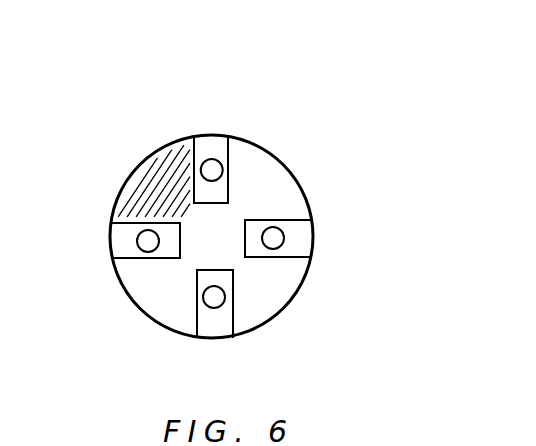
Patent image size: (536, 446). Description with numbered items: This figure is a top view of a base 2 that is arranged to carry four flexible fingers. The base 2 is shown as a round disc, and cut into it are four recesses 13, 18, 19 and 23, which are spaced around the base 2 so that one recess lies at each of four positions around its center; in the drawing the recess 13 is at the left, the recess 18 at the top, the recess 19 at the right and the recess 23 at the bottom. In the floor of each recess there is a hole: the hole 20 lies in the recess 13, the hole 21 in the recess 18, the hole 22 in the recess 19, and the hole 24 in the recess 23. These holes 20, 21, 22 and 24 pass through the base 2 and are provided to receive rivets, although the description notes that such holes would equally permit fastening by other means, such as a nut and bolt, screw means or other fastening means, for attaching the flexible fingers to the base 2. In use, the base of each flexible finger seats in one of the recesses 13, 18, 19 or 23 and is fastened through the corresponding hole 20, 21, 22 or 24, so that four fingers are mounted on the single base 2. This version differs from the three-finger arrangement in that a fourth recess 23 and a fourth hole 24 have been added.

The base 2 is at (133, 131).
The recess 13 is at (123, 255).
The recess 18 is at (203, 137).
The recess 19 is at (298, 248).
The hole 20 is at (148, 243).
The hole 21 is at (213, 152).
The hole 22 is at (275, 245).
The recess 23 is at (221, 331).
The hole 24 is at (215, 305).